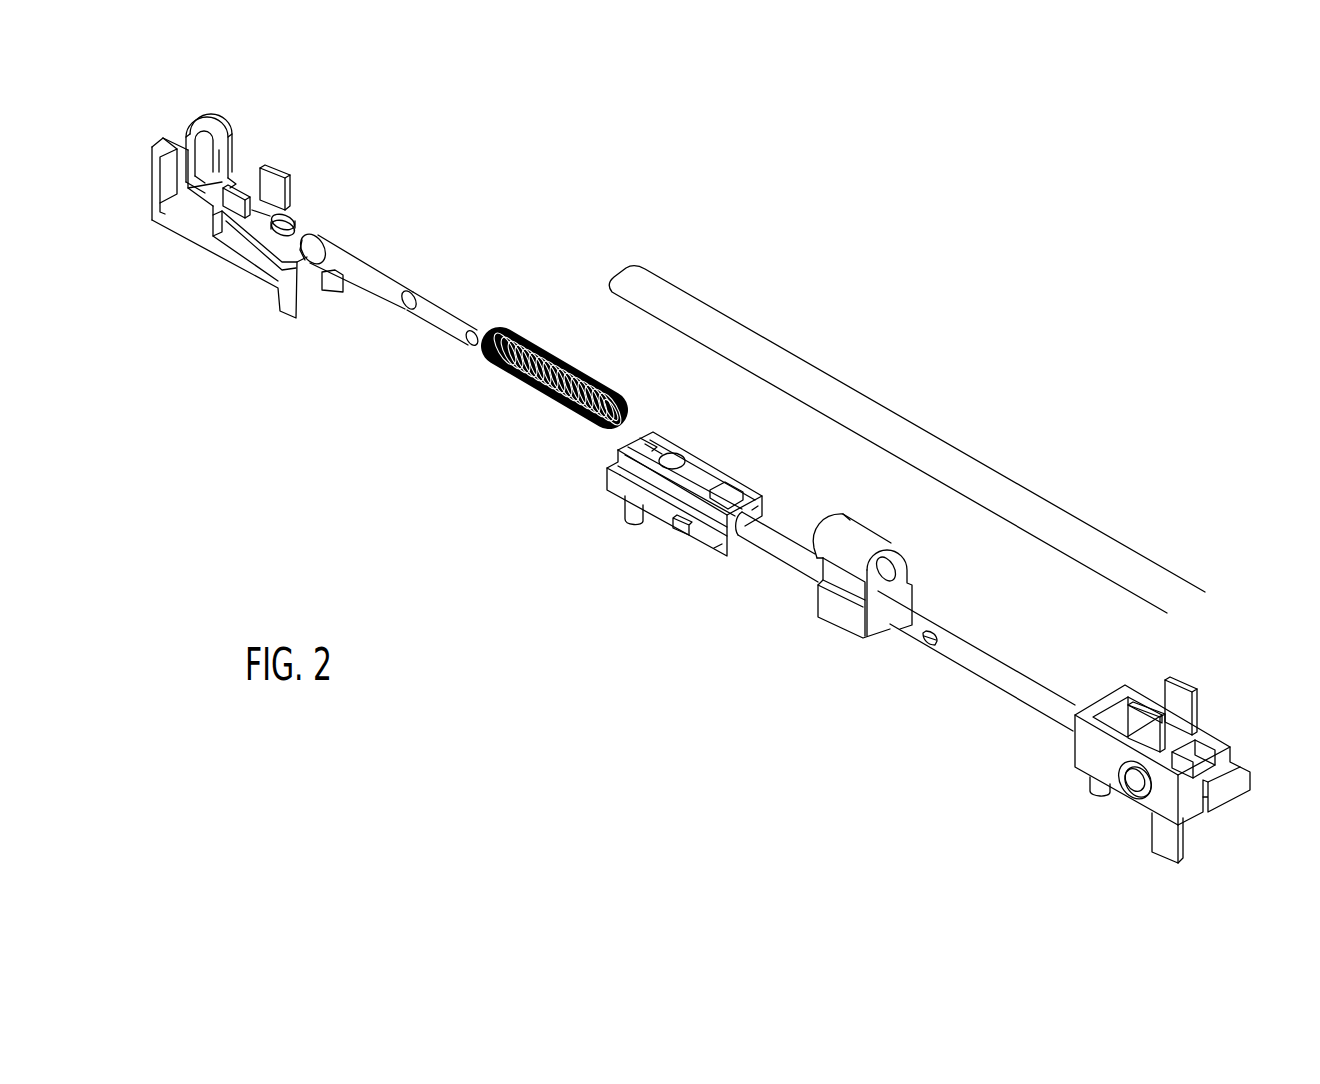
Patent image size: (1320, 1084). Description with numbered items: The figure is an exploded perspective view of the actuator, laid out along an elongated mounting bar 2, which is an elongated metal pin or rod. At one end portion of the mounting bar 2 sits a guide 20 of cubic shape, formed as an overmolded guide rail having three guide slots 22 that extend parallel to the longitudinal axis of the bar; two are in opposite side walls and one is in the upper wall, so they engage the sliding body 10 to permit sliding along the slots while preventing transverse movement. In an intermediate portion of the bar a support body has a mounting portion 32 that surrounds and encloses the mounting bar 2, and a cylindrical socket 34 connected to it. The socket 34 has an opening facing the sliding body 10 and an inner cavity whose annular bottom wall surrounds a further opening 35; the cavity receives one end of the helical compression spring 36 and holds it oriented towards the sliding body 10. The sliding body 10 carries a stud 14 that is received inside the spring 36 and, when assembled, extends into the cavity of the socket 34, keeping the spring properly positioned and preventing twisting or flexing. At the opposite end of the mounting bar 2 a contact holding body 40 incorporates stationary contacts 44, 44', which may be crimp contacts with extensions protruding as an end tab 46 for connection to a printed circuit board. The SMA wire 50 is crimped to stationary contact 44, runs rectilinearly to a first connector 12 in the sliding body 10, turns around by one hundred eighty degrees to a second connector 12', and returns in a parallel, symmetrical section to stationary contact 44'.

The elongated mounting bar 2 is at (1012, 662).
The sliding body 10 is at (188, 228).
The first connector 12 is at (260, 175).
The second connector 12' is at (293, 172).
The stud 14 is at (388, 272).
The guide 20 is at (650, 537).
The guide slots 22 is at (648, 437).
The mounting portion 32 is at (868, 630).
The socket 34 is at (866, 535).
The further opening 35 is at (889, 569).
The helical compression spring 36 is at (533, 396).
The contact holding body 40 is at (1063, 783).
The stationary contact 44 is at (1143, 696).
The stationary contact 44' is at (1204, 687).
The end tab 46 is at (1160, 854).
The SMA wire 50 is at (960, 444).